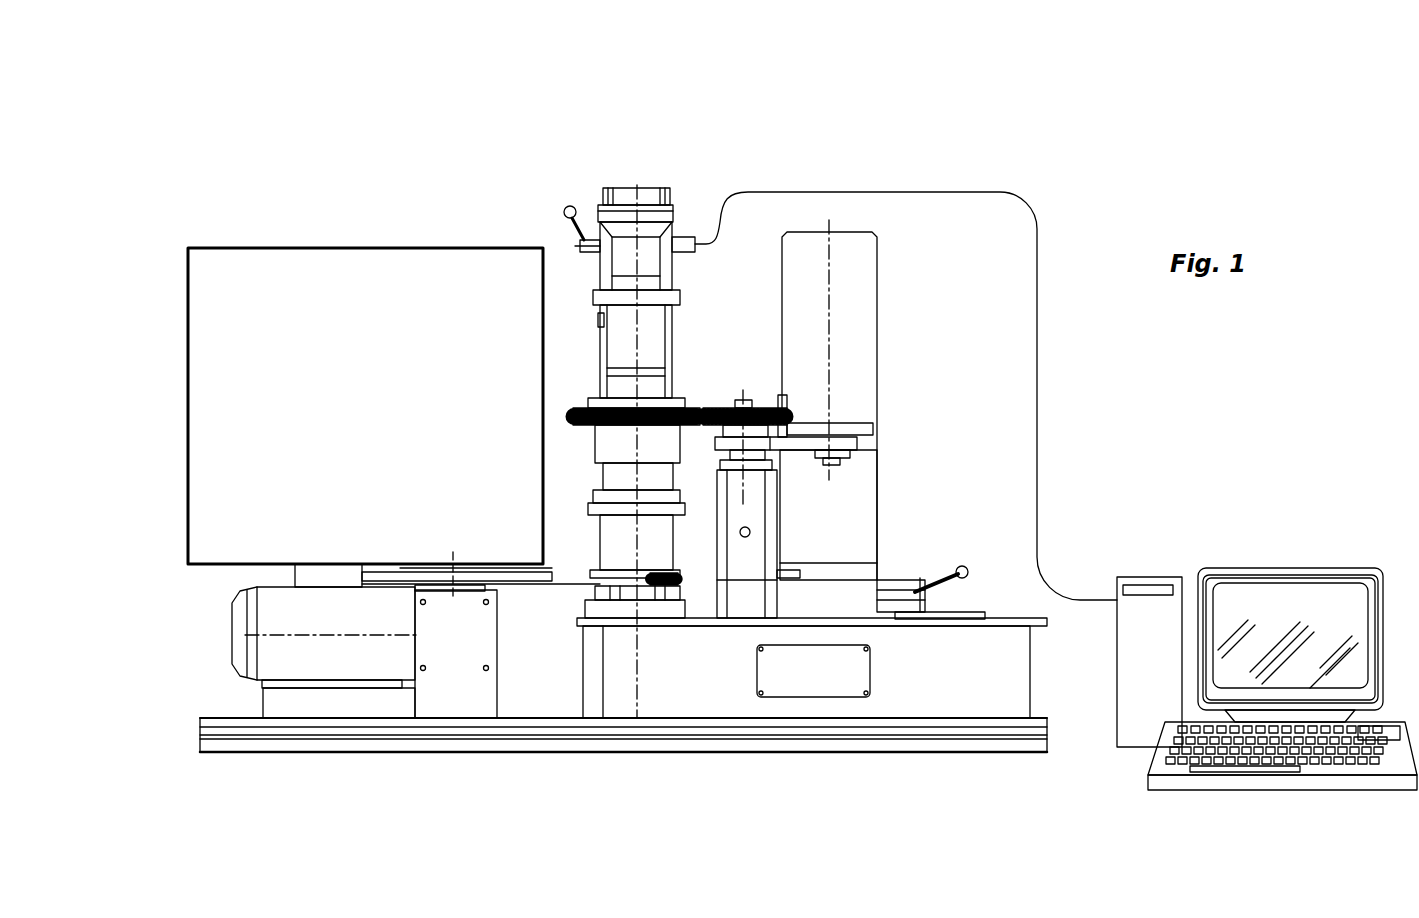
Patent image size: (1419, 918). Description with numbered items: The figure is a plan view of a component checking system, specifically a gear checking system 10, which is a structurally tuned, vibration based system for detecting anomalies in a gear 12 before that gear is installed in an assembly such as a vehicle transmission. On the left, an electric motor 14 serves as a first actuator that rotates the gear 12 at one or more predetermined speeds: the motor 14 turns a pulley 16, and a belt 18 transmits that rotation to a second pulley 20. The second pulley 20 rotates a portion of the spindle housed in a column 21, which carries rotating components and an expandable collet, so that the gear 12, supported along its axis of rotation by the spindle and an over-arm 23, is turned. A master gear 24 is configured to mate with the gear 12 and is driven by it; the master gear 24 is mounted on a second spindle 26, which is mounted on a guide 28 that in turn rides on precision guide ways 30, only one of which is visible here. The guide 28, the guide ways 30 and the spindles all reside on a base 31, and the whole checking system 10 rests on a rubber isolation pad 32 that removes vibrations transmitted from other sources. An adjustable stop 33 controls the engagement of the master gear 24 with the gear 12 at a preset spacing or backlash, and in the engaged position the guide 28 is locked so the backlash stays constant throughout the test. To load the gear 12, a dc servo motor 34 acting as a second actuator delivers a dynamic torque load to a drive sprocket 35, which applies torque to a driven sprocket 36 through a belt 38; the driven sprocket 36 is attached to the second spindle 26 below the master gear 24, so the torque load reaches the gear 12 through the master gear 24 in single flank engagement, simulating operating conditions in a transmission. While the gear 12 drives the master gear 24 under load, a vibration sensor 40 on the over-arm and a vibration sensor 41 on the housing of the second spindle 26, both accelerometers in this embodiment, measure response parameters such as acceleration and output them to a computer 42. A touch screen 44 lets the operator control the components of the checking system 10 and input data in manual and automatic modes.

The gear checking system 10 is at (233, 118).
The gear 12 is at (577, 400).
The electric motor 14 is at (232, 652).
The pulley 16 is at (512, 590).
The belt 18 is at (572, 590).
The second pulley 20 is at (697, 590).
The column 21 is at (600, 183).
The over-arm 23 is at (643, 187).
The master gear 24 is at (722, 400).
The second spindle 26 is at (715, 530).
The guide 28 is at (877, 580).
The precision guide ways 30 is at (1007, 617).
The base 31 is at (1032, 668).
The rubber isolation pad 32 is at (950, 752).
The adjustable stop 33 is at (900, 585).
The dc servo motor 34 is at (877, 313).
The drive sprocket 35 is at (860, 448).
The driven sprocket 36 is at (715, 445).
The belt 38 is at (800, 452).
The vibration sensor 40 is at (688, 237).
The vibration sensor 41 is at (778, 533).
The computer 42 is at (1340, 532).
The touch screen 44 is at (188, 352).